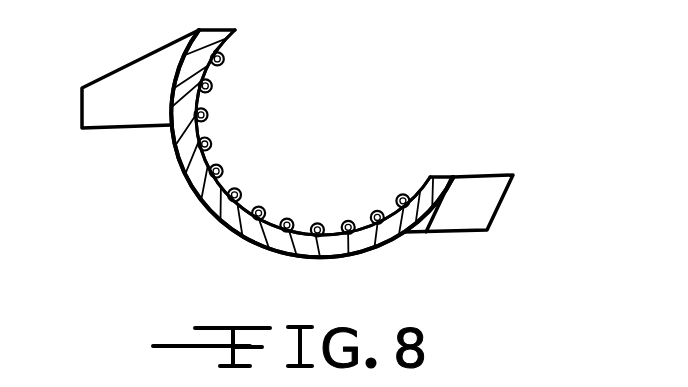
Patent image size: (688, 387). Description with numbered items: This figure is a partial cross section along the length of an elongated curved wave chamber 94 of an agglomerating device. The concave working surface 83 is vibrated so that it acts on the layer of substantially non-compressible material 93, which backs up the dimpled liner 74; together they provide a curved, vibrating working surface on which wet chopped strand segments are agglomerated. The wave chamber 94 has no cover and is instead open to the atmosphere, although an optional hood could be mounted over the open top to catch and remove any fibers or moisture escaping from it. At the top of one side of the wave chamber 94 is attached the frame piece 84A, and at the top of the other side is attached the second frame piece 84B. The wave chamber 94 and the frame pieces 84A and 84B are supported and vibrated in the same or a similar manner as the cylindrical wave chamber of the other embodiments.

The dimpled liner 74 is at (223, 168).
The concave working surface 83 is at (243, 177).
The frame piece 84A is at (119, 93).
The second frame piece 84B is at (492, 193).
The layer of substantially non-compressible material 93 is at (177, 140).
The elongated curved wave chamber 94 is at (226, 243).